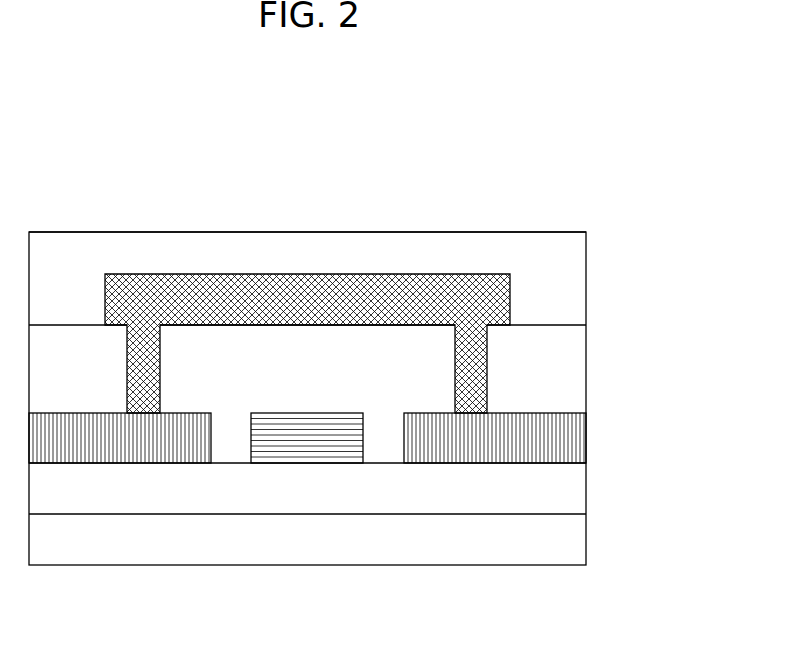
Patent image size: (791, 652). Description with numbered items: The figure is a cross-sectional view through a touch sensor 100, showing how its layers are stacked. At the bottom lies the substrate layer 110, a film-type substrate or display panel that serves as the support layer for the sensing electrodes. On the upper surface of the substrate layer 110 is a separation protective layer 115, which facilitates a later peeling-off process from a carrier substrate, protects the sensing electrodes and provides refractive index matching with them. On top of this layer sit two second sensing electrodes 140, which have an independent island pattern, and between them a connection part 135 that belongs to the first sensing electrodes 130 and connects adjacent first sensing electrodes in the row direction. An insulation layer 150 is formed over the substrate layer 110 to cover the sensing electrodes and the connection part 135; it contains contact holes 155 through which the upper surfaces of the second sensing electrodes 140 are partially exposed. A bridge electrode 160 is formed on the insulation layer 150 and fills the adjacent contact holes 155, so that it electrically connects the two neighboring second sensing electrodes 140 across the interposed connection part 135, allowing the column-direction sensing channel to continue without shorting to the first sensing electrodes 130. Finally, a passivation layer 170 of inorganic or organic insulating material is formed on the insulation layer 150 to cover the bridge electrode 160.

The touch sensor 100 is at (66, 133).
The substrate layer 110 is at (578, 540).
The separation protective layer 115 is at (578, 487).
The first sensing electrodes 130 is at (307, 520).
The connection part 135 is at (305, 450).
The second sensing electrodes 140 is at (158, 450).
The insulation layer 150 is at (578, 366).
The contact holes 155 is at (482, 356).
The bridge electrode 160 is at (273, 275).
The passivation layer 170 is at (578, 284).